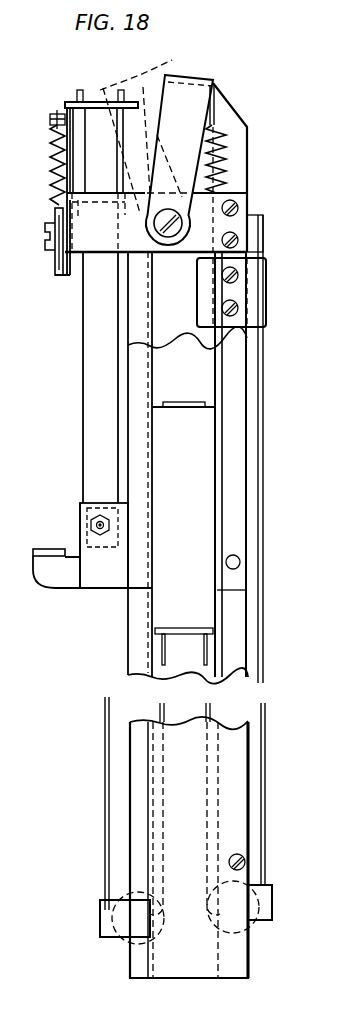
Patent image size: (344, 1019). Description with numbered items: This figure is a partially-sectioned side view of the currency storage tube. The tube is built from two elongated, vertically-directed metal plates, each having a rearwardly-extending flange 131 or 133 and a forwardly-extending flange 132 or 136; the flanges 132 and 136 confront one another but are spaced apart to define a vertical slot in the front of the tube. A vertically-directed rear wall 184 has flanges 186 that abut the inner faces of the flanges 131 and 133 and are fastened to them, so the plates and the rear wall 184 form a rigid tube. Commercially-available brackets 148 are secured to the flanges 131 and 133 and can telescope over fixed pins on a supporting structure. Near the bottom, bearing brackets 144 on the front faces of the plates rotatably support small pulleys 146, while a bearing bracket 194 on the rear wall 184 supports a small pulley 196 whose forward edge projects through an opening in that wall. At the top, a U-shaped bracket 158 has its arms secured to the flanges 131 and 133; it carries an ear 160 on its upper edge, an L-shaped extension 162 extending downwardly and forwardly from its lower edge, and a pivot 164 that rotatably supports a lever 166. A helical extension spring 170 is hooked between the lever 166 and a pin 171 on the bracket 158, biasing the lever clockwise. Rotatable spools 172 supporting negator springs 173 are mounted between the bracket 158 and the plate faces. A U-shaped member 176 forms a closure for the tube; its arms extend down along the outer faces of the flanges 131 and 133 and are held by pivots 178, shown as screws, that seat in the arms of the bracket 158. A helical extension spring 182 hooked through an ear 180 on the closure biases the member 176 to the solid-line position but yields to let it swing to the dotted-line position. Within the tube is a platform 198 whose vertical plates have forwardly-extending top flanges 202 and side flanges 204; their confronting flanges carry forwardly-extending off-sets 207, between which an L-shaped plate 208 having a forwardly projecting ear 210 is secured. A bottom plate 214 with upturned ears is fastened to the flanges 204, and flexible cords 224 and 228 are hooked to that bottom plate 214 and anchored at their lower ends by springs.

The rearwardly-extending flange 131 is at (155, 351).
The forwardly-extending flange 132 is at (137, 622).
The rearwardly-extending flange 133 is at (180, 973).
The forwardly-extending flange 136 is at (135, 960).
The bearing brackets 144 is at (103, 932).
The small pulleys 146 is at (123, 893).
The brackets 148 is at (267, 268).
The U-shaped bracket 158 is at (65, 103).
The ear 160 is at (93, 113).
The L-shaped extension 162 is at (62, 268).
The pivot 164 is at (45, 249).
The lever 166 is at (52, 258).
The helical extension spring 170 is at (52, 149).
The pin 171 is at (50, 118).
The rotatable spools 172 is at (80, 91).
The negator springs 173 is at (106, 108).
The U-shaped member 176 is at (179, 74).
The pivots 178 is at (170, 237).
The ear 180 is at (215, 110).
The helical extension spring 182 is at (222, 170).
The rear wall 184 is at (218, 590).
The flanges 186 is at (237, 528).
The bearing bracket 194 is at (258, 920).
The small pulleys 196 is at (243, 870).
The platform 198 is at (213, 405).
The top flange 202 is at (179, 401).
The side flange 204 is at (205, 456).
The off-sets 207 is at (105, 582).
The L-shaped plate 208 is at (137, 455).
The ear 210 is at (45, 552).
The bottom plate 214 is at (163, 638).
The flexible cord 224 is at (106, 775).
The flexible cord 228 is at (266, 798).